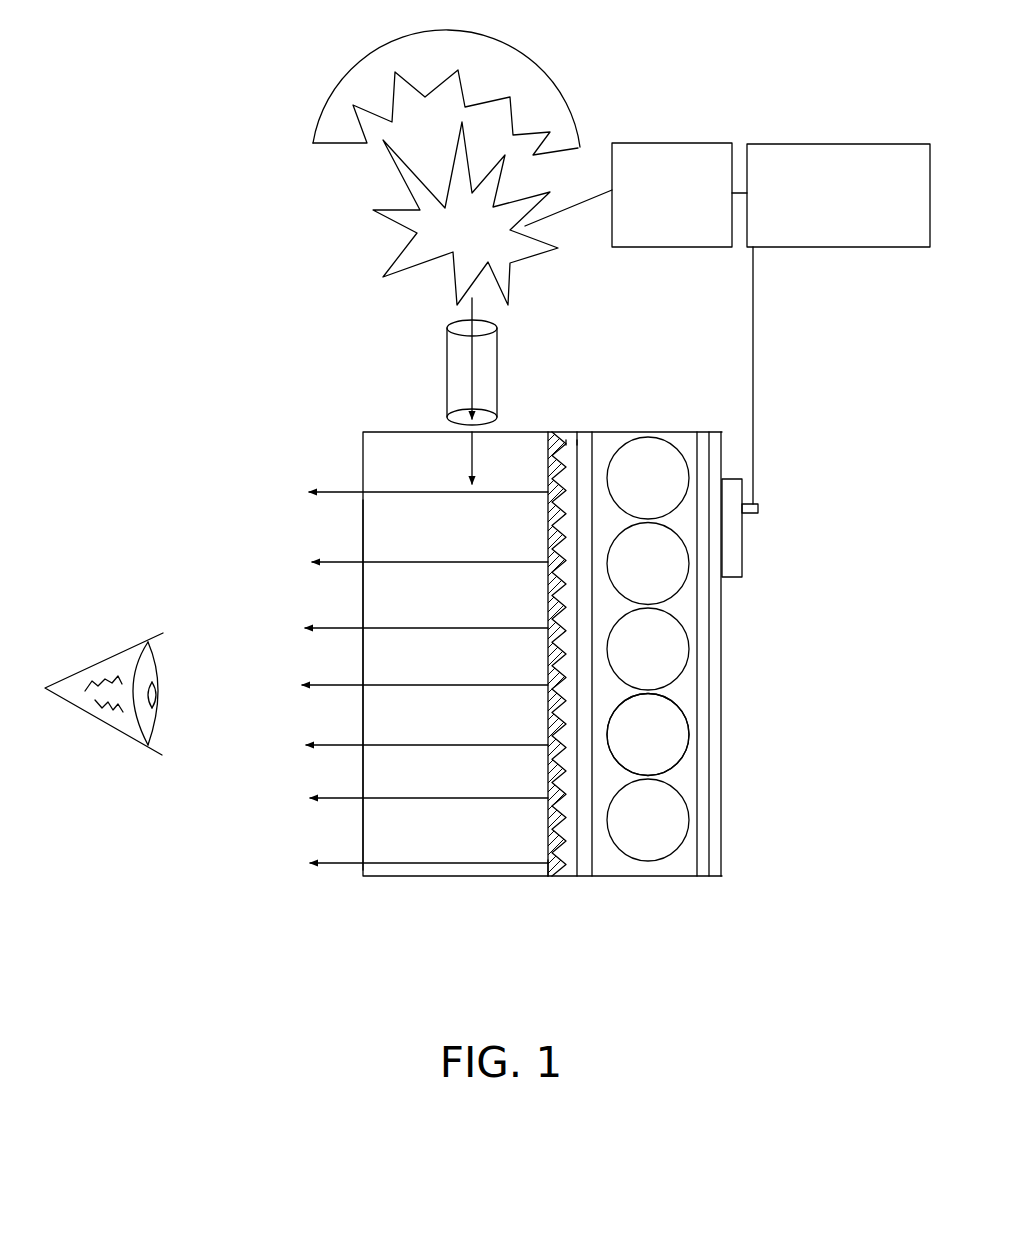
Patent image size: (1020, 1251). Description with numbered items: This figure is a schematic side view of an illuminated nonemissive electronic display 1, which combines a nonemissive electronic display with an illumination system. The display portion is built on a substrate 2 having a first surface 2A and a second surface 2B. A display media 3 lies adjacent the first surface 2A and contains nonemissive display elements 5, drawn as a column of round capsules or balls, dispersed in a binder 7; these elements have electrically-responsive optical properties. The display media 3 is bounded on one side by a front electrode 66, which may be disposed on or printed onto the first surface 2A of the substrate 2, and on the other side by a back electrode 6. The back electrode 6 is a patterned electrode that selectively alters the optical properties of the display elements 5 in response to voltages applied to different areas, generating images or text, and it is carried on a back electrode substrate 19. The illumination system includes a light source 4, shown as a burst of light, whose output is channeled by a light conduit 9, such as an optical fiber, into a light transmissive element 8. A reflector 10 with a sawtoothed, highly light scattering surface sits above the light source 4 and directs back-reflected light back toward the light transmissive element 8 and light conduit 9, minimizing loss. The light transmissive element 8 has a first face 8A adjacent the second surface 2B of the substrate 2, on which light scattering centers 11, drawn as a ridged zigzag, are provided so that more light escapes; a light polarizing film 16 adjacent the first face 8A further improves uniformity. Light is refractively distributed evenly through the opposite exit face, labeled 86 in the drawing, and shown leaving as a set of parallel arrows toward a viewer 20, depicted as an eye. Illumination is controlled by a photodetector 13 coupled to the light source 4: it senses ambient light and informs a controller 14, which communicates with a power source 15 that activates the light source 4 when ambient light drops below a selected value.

The illuminated nonemissive electronic display 1 is at (734, 44).
The substrate 2 is at (587, 364).
The first surface 2A is at (582, 431).
The second surface 2B is at (573, 431).
The display media 3 is at (597, 910).
The light source 4 is at (387, 246).
The nonemissive display elements 5 is at (645, 450).
The back electrode 6 is at (702, 430).
The binder 7 is at (679, 716).
The light transmissive element 8 is at (360, 943).
The first face 8A is at (557, 878).
The light conduit 9 is at (432, 363).
The reflector 10 is at (463, 34).
The light scattering centers 11 is at (543, 727).
The photodetector 13 is at (744, 558).
The controller 14 is at (878, 248).
The power source 15 is at (686, 248).
The light polarizing film 16 is at (545, 473).
The back electrode substrate 19 is at (718, 431).
The viewer 20 is at (134, 766).
The front electrode 66 is at (583, 879).
The light exit surface 86 is at (360, 877).